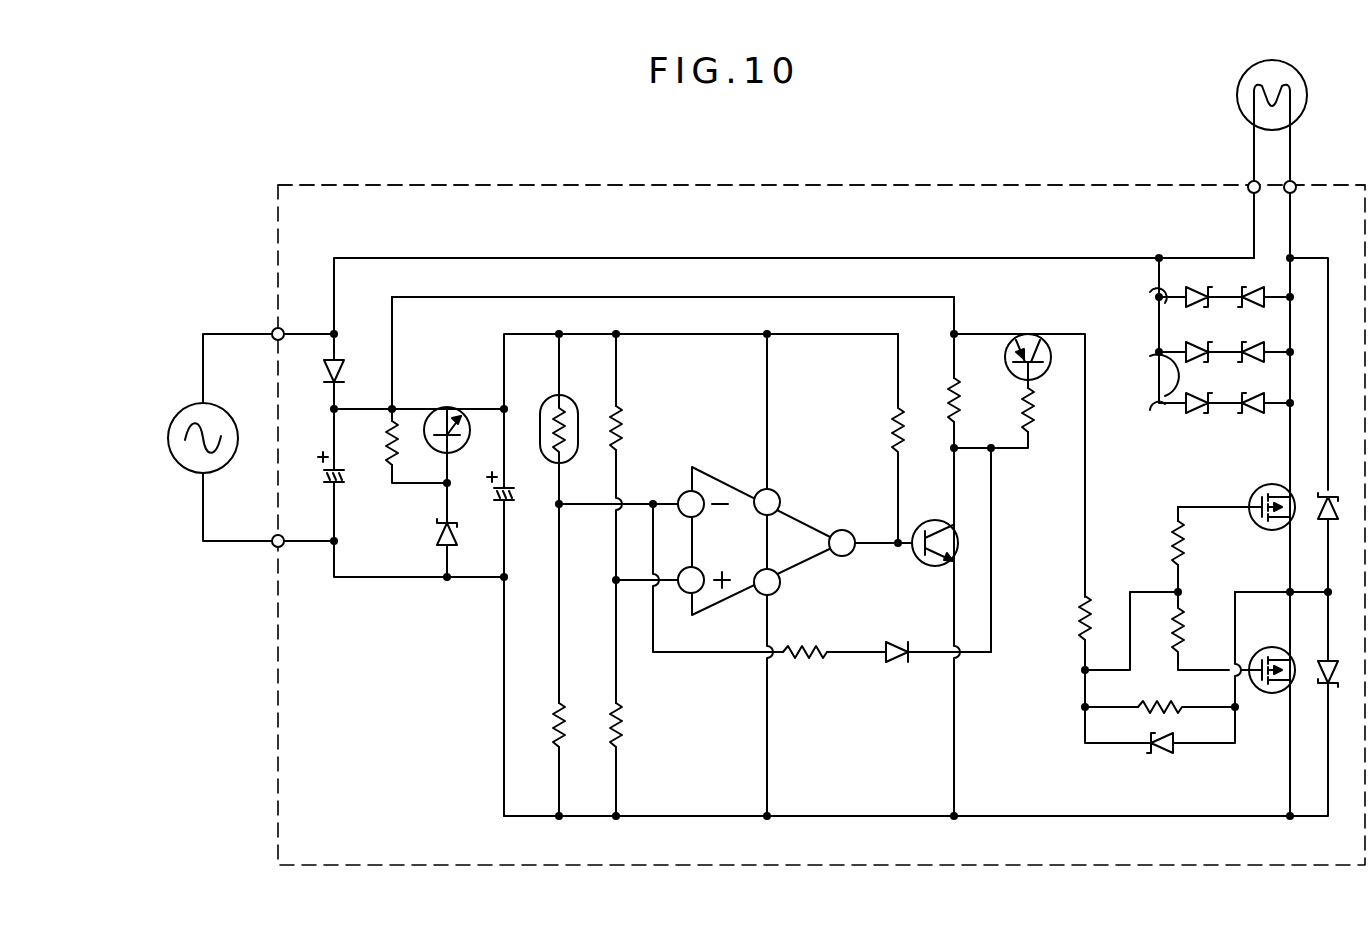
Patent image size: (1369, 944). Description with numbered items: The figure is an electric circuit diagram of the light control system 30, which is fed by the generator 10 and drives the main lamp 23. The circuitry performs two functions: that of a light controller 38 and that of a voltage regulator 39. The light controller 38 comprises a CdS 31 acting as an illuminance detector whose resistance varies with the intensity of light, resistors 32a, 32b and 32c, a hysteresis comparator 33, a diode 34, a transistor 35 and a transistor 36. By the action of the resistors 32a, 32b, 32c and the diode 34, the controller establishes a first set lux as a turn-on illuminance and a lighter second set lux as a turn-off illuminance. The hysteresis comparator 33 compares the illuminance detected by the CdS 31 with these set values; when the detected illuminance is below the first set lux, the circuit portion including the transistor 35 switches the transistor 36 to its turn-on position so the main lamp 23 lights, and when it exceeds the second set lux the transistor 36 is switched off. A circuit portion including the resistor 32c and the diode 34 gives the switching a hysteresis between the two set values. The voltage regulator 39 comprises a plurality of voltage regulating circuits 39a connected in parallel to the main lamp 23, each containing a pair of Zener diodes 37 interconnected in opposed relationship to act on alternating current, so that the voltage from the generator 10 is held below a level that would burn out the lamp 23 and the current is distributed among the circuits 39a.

The generator 10 is at (194, 474).
The main lamp 23 is at (1237, 95).
The light control system 30 is at (757, 232).
The CdS illuminance detector 31 is at (541, 400).
The resistor 32a is at (620, 420).
The resistor 32b is at (623, 723).
The resistor 32c is at (803, 665).
The hysteresis comparator 33 is at (725, 475).
The diode 34 is at (896, 667).
The transistor 35 is at (1028, 334).
The transistor 36 is at (1253, 498).
The Zener diode 37 is at (1252, 285).
The light controller 38 is at (486, 671).
The voltage regulator 39 is at (1164, 434).
The voltage regulating circuit 39a is at (1160, 293).